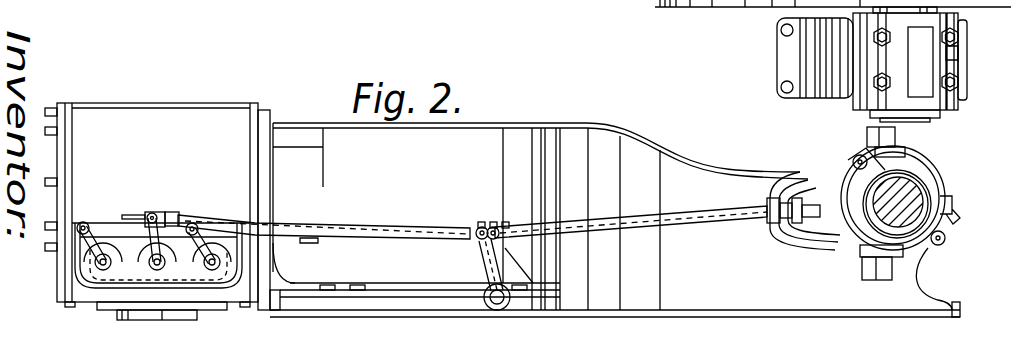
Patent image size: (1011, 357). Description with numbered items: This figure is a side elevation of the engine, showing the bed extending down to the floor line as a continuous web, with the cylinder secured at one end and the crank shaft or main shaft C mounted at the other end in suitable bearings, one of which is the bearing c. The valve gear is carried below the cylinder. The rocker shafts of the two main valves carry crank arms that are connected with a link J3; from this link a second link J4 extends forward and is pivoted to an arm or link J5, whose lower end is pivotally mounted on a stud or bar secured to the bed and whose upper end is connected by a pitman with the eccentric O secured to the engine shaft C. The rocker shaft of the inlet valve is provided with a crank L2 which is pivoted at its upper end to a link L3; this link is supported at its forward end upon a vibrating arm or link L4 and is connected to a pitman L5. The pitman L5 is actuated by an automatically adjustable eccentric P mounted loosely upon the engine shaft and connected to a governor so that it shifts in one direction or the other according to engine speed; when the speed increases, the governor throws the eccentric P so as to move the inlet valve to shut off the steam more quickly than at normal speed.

The link J3 is at (113, 226).
The crank L2 is at (180, 226).
The link L3 is at (341, 206).
The second link J4 is at (312, 238).
The arm or link J5 is at (470, 242).
The vibrating arm or link L4 is at (502, 242).
The pitman L5 is at (712, 222).
The eccentric O is at (840, 160).
The automatically adjustable eccentric P is at (946, 206).
The crank shaft or main shaft C is at (913, 120).
The bearing c is at (958, 53).